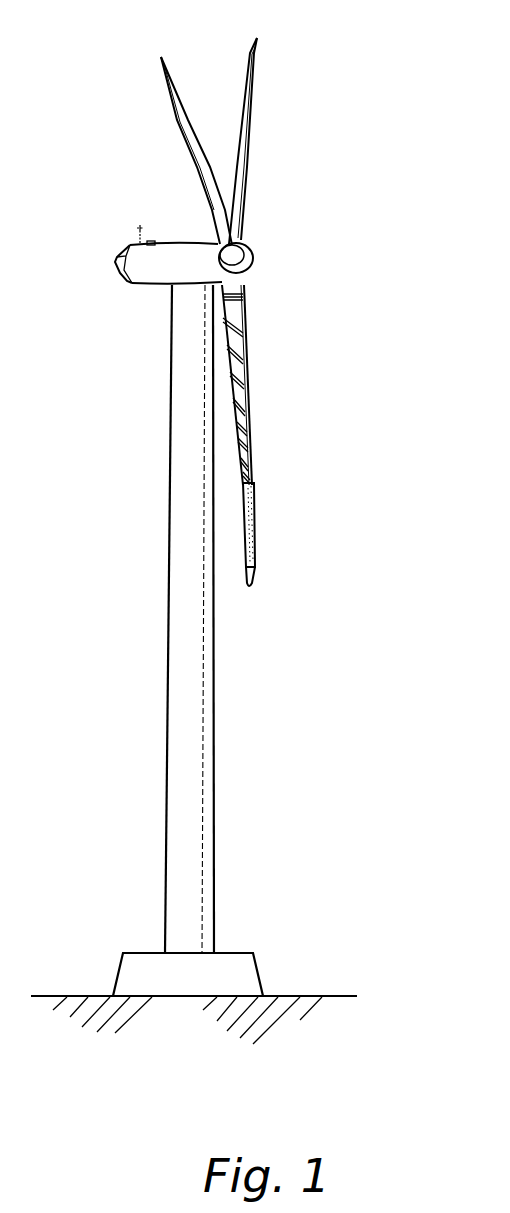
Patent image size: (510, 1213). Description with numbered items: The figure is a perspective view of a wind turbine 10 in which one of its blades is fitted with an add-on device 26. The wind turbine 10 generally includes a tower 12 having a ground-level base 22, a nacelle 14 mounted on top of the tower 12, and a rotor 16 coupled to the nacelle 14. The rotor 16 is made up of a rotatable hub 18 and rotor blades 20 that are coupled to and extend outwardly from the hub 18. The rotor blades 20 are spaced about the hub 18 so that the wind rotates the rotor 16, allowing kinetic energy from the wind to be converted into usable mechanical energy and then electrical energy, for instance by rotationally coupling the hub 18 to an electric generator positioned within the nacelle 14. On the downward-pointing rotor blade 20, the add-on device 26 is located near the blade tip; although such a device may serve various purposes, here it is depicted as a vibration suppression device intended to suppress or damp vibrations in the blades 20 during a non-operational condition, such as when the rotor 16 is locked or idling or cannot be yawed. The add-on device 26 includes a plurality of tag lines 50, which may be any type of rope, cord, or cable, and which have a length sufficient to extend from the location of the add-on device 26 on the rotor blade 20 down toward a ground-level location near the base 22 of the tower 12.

The wind turbine 10 is at (340, 107).
The tower 12 is at (177, 735).
The nacelle 14 is at (150, 284).
The rotor 16 is at (256, 241).
The rotatable hub 18 is at (253, 262).
The rotor blade 20 is at (195, 136).
The ground-level base 22 is at (238, 953).
The add-on device 26 is at (252, 516).
The tag lines 50 is at (243, 373).